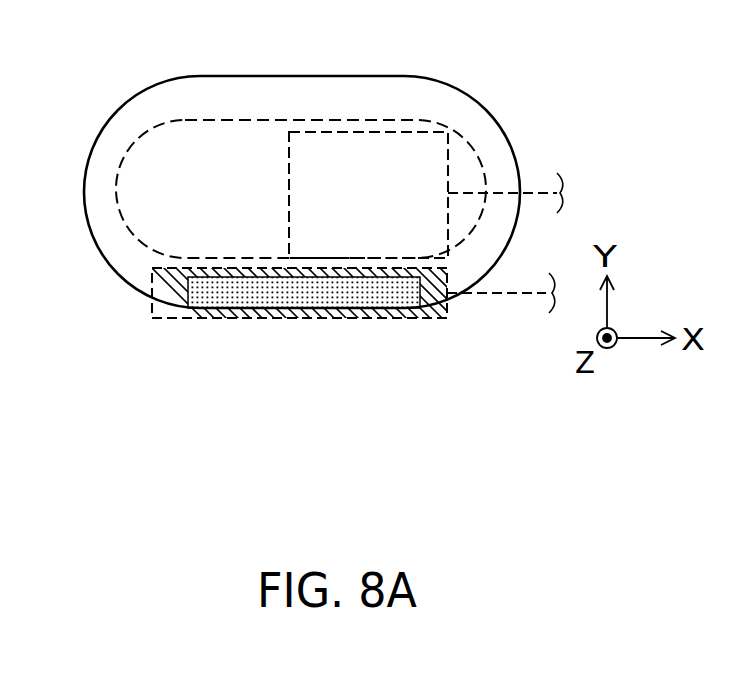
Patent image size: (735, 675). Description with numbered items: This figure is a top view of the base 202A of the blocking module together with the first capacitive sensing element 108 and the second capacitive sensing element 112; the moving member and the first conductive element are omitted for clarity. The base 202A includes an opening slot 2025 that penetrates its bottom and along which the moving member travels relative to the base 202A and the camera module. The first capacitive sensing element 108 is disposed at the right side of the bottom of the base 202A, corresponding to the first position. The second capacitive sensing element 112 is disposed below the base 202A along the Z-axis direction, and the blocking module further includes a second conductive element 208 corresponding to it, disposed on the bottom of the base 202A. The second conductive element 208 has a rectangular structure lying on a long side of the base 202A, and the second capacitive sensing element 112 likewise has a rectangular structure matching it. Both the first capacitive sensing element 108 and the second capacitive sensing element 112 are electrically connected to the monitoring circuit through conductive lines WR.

The base 202A is at (433, 102).
The opening slot 2025 is at (482, 172).
The first capacitive sensing element 108 is at (452, 152).
The second capacitive sensing element 112 is at (174, 298).
The second conductive element 208 is at (370, 298).
The conductive lines WR is at (541, 197).